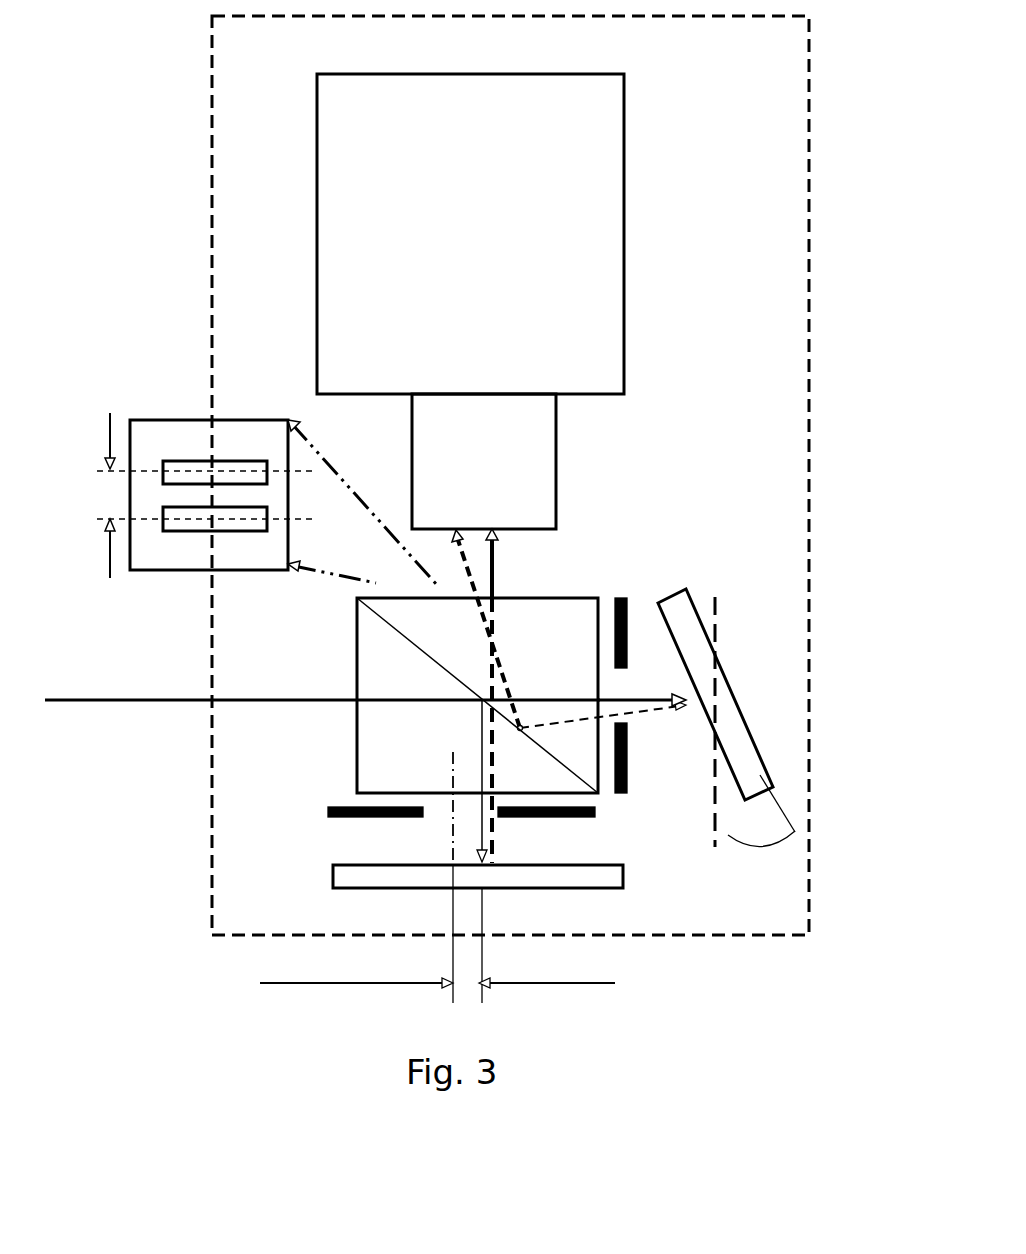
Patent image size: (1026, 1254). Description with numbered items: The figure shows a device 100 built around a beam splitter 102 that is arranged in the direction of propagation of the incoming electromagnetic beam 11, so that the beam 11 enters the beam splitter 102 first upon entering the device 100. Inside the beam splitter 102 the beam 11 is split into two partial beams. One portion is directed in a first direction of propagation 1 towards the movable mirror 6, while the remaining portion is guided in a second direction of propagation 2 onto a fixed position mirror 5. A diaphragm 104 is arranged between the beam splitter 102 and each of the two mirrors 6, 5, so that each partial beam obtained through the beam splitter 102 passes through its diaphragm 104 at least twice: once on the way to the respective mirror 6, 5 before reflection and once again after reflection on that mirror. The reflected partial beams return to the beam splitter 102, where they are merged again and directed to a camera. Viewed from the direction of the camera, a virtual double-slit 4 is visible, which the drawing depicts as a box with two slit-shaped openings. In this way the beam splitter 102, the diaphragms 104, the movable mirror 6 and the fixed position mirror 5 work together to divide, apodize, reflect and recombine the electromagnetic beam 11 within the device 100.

The device 100 is at (140, 212).
The virtual double-slit 4 is at (256, 428).
The beam splitter 102 is at (397, 658).
The diaphragm 104 is at (623, 594).
The first direction of propagation 1 is at (638, 693).
The electromagnetic beam 11 is at (272, 705).
The movable mirror 6 is at (738, 717).
The second direction of propagation 2 is at (478, 823).
The fixed position mirror 5 is at (333, 870).